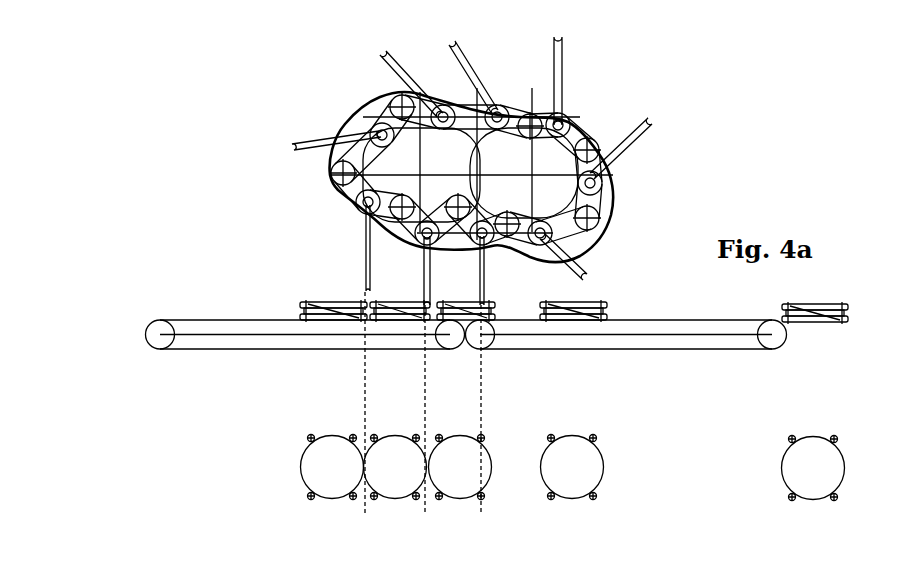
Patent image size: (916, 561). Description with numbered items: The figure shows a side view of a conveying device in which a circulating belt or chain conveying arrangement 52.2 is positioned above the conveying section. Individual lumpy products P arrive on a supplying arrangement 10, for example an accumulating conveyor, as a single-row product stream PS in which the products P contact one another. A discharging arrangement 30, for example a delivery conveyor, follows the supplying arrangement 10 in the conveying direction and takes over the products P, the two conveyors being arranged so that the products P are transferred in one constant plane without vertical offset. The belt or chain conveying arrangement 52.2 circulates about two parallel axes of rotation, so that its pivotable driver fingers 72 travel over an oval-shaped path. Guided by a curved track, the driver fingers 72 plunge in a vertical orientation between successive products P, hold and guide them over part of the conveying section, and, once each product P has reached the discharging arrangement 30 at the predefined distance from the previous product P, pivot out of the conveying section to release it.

The belt or chain conveying arrangement 52.2 is at (367, 115).
The driver finger 72 is at (565, 53).
The supplying arrangement 10 is at (225, 325).
The discharging arrangement 30 is at (688, 340).
The single-row product stream PS is at (340, 293).
The product P is at (815, 315).